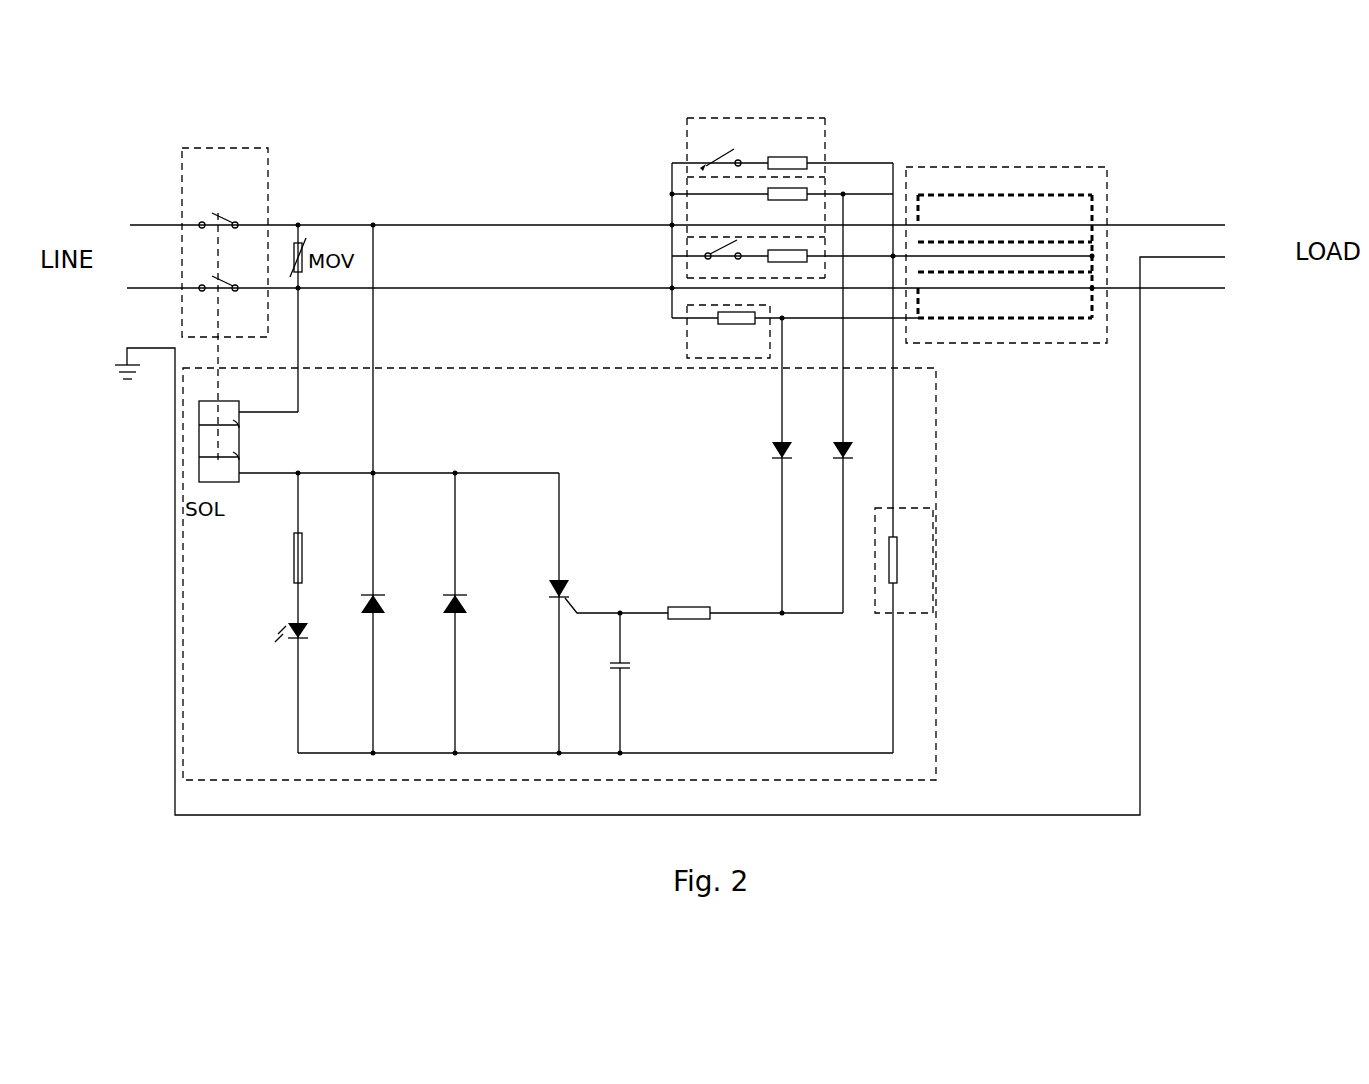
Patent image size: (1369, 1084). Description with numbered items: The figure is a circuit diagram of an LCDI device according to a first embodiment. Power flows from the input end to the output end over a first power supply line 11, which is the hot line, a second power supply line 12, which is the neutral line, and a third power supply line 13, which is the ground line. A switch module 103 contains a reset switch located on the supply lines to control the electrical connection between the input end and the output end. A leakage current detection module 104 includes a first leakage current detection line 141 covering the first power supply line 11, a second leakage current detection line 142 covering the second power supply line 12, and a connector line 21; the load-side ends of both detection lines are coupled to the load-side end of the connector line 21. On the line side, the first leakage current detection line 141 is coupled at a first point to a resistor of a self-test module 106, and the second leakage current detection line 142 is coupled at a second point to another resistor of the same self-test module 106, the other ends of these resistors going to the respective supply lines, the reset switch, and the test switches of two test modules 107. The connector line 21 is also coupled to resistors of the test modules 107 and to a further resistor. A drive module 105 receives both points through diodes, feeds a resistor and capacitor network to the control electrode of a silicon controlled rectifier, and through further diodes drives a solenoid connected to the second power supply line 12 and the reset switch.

The first power supply line 11 is at (1155, 225).
The second power supply line 12 is at (1172, 288).
The third power supply line 13 is at (1172, 257).
The connector line 21 is at (1055, 253).
The switch module 103 is at (248, 150).
The leakage current detection module 104 is at (1048, 252).
The drive module 105 is at (937, 700).
The self-test module 106 is at (828, 178).
The test module 107 is at (685, 133).
The first leakage current detection line 141 is at (1042, 193).
The second leakage current detection line 142 is at (1035, 322).